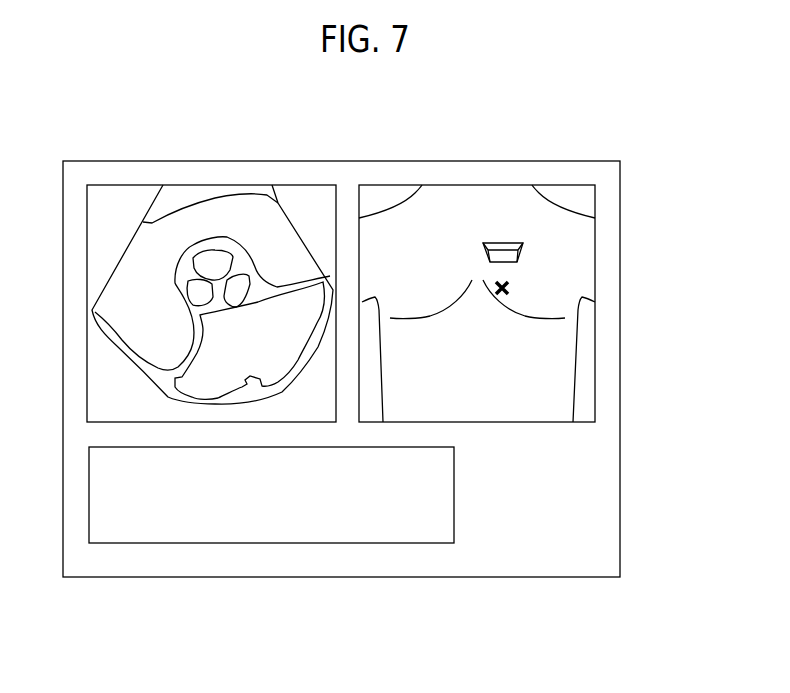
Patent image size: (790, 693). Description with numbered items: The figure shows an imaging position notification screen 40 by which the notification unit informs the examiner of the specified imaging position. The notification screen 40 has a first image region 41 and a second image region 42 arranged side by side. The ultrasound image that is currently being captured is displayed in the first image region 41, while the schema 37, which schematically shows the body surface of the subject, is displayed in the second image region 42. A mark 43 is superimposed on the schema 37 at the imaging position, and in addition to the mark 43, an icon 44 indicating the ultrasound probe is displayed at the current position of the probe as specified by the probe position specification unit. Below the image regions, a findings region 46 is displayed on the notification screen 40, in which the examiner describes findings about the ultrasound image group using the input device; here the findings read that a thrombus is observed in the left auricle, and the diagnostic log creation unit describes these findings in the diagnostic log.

The notification screen 40 is at (590, 160).
The first image region 41 is at (301, 183).
The second image region 42 is at (550, 184).
The schema 37 is at (588, 238).
The icon 44 is at (523, 258).
The mark 43 is at (509, 288).
The findings region 46 is at (143, 543).